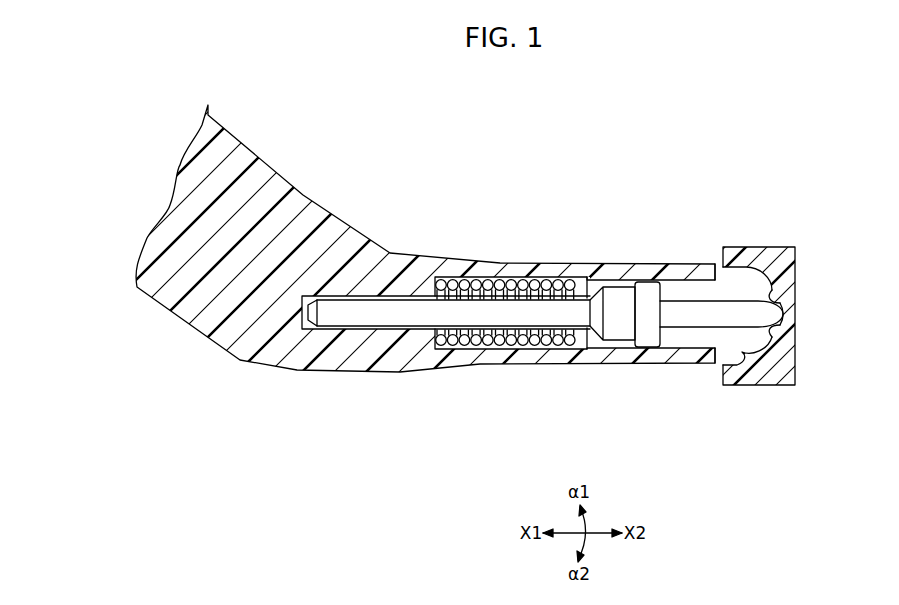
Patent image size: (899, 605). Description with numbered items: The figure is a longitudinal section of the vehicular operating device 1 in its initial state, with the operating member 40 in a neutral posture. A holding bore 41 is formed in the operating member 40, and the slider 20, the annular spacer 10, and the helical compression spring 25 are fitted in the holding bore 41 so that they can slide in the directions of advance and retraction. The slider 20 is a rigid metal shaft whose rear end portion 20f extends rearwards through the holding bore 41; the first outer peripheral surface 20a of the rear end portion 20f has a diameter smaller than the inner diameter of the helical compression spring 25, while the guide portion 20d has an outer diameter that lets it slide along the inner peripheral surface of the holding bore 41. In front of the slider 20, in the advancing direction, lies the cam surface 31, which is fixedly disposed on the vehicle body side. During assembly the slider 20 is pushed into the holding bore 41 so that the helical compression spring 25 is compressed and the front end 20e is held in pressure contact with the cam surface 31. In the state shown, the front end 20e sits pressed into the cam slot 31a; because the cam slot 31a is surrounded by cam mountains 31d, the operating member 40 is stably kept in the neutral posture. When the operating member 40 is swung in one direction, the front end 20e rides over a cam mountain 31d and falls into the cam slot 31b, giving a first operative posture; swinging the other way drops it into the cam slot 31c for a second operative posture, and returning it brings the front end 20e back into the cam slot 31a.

The vehicular operating device 1 is at (411, 133).
The operating member 40 is at (302, 188).
The holding bore 41 is at (716, 266).
The slider 20 is at (545, 318).
The first outer peripheral surface 20a is at (410, 318).
The rear end portion 20f is at (360, 318).
The guide portion 20d is at (647, 283).
The front end 20e is at (724, 320).
The annular spacer 10 is at (597, 297).
The helical compression spring 25 is at (497, 282).
The cam surface 31 is at (735, 333).
The cam slot 31a is at (783, 313).
The cam slot 31b is at (744, 267).
The cam slot 31c is at (750, 358).
The cam mountains 31d is at (776, 290).